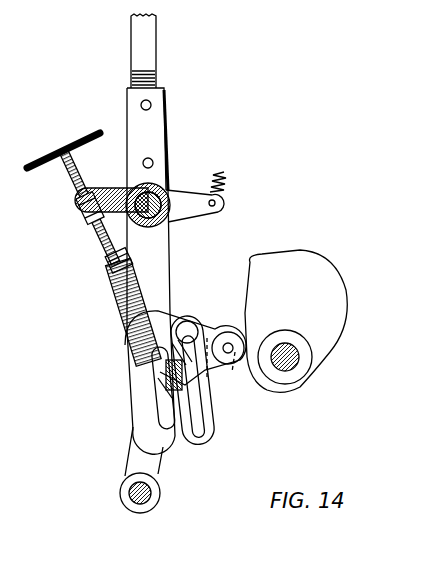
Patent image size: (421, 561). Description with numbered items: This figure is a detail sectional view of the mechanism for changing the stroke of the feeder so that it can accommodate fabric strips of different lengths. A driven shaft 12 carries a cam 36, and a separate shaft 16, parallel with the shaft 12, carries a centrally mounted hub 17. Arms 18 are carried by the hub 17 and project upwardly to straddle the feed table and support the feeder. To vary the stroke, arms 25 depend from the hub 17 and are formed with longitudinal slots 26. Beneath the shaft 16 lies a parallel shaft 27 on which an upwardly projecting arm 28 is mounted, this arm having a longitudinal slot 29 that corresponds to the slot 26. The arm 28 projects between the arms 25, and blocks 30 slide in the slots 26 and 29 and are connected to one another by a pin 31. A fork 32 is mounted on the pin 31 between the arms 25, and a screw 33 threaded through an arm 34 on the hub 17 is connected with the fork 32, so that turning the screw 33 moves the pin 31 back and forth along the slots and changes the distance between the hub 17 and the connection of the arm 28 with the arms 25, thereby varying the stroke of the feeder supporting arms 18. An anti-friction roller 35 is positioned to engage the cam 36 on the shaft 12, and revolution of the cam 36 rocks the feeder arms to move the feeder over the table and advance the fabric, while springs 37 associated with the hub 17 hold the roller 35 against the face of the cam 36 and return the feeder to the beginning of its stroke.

The driven shaft 12 is at (293, 363).
The shaft 16 is at (128, 214).
The hub 17 is at (127, 221).
The arms 18 is at (150, 62).
The arms 25 is at (183, 402).
The longitudinal slots 26 is at (201, 437).
The shaft 27 is at (150, 493).
The upwardly projecting arm 28 is at (196, 422).
The longitudinal slot 29 is at (170, 388).
The blocks 30 is at (165, 374).
The pin 31 is at (157, 384).
The fork 32 is at (172, 343).
The screw 33 is at (72, 180).
The arm 34 is at (82, 207).
The anti-friction roller 35 is at (232, 372).
The cam 36 is at (318, 283).
The springs 37 is at (225, 182).